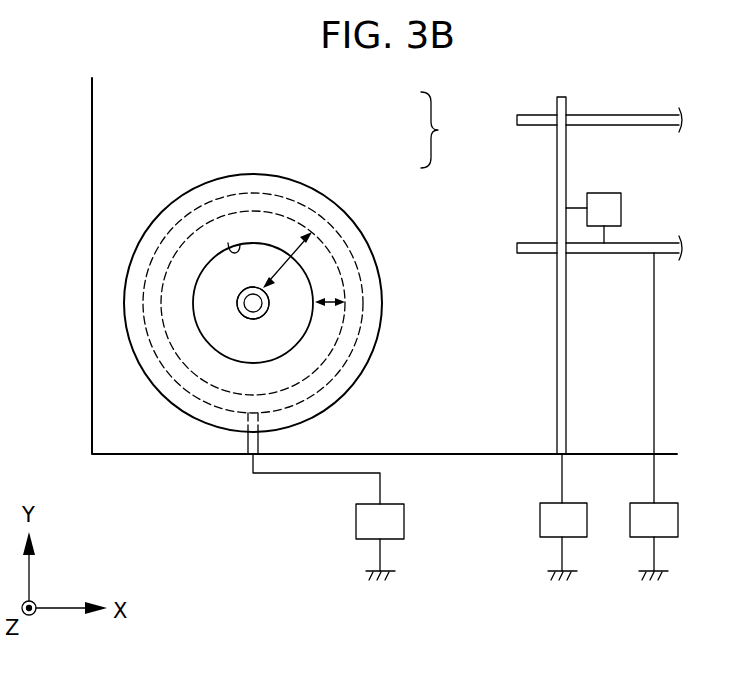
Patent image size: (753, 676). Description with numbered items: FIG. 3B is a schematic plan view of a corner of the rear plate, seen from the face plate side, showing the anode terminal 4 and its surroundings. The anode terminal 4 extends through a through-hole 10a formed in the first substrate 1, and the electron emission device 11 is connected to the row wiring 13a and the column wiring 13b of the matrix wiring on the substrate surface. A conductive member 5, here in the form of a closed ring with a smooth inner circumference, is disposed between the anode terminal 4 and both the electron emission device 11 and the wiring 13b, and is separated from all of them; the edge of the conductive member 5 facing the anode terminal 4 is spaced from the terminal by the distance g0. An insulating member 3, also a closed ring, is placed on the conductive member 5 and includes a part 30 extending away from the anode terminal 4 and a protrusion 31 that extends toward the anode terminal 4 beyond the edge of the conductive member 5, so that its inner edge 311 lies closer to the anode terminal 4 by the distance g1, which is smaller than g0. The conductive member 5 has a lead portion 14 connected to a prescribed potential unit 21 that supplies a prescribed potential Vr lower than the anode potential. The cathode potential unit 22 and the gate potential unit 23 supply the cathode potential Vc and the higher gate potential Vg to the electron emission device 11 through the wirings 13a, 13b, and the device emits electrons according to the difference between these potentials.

The first substrate 1 is at (207, 440).
The insulating member 3 is at (293, 262).
The anode terminal 4 is at (262, 303).
The conductive member 5 is at (348, 269).
The through-hole 10a is at (237, 299).
The electron emission device 11 is at (603, 197).
The row wiring 13a is at (589, 235).
The column wiring 13b is at (563, 402).
The lead portion 14 is at (254, 440).
The prescribed potential unit 21 is at (404, 525).
The cathode potential unit 22 is at (678, 523).
The gate potential unit 23 is at (587, 523).
The part of insulating member 30 is at (264, 187).
The protrusion 31 is at (272, 235).
The edge of insulating member 311 is at (228, 243).
The distance g0 is at (288, 268).
The distance g1 is at (327, 305).